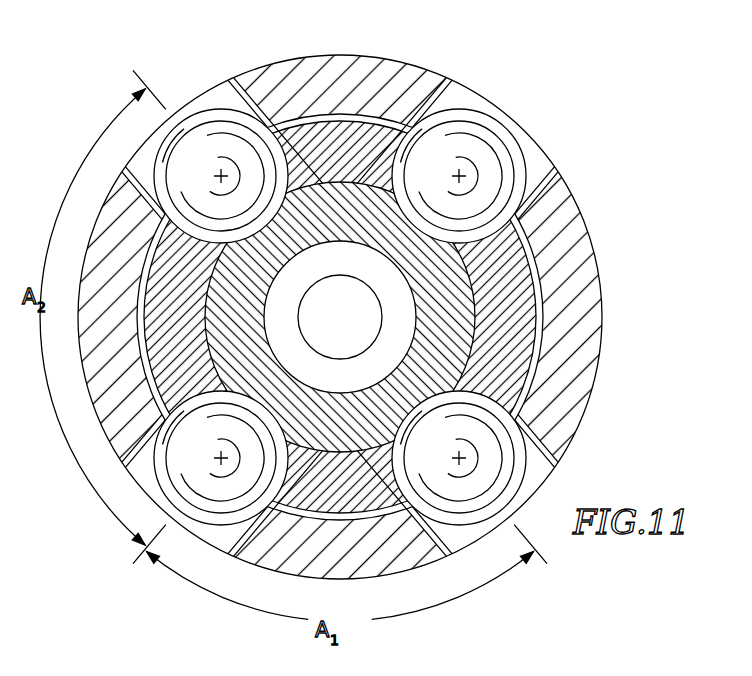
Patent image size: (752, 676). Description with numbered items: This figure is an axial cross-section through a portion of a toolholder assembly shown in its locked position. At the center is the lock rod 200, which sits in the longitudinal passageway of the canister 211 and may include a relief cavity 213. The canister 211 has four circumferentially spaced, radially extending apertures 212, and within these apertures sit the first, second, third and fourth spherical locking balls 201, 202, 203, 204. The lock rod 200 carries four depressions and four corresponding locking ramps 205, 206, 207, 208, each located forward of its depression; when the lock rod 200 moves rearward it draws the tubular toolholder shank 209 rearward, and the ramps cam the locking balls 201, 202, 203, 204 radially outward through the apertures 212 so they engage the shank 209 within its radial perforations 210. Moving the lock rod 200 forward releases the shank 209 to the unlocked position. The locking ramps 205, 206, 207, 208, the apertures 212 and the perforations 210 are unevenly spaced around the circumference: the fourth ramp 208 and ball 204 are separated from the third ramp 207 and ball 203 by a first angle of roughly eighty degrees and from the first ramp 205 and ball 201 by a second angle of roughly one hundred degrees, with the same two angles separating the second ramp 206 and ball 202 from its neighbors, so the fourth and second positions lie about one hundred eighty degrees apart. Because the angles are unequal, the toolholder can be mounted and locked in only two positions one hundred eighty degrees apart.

The lock rod 200 is at (329, 192).
The first spherical locking ball 201 is at (203, 123).
The second spherical locking ball 202 is at (497, 137).
The third spherical locking ball 203 is at (522, 460).
The fourth spherical locking ball 204 is at (200, 507).
The first locking ramp 205 is at (262, 238).
The second locking ramp 206 is at (410, 228).
The third locking ramp 207 is at (397, 401).
The fourth locking ramp 208 is at (290, 396).
The tubular toolholder shank 209 is at (278, 72).
The perforations 210 is at (453, 92).
The canister 211 is at (532, 343).
The apertures 212 is at (378, 158).
The relief cavity 213 is at (360, 335).